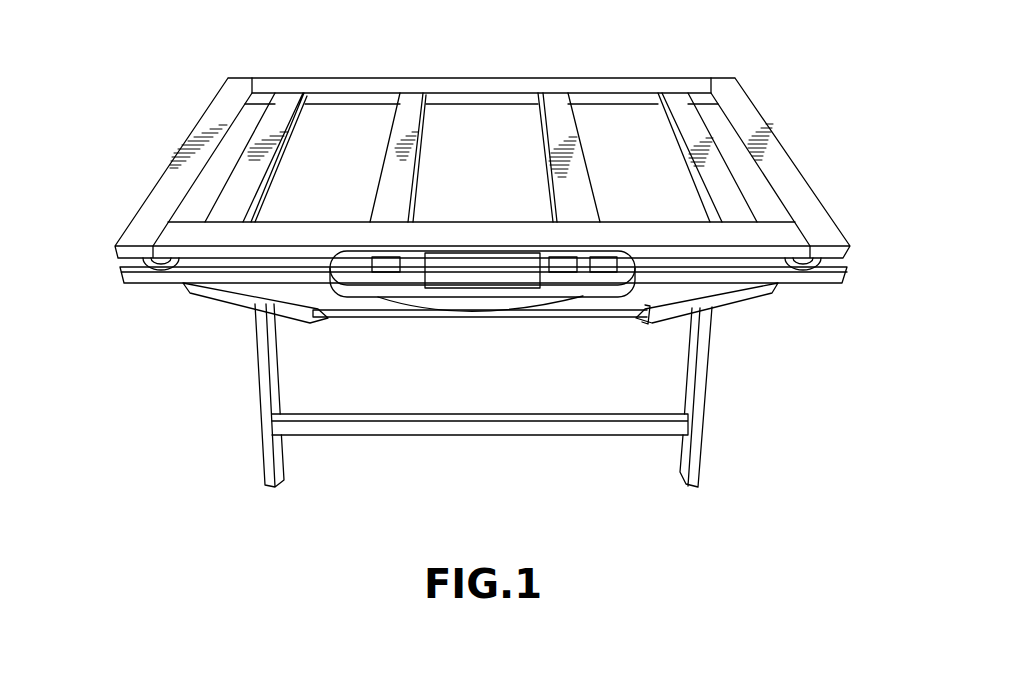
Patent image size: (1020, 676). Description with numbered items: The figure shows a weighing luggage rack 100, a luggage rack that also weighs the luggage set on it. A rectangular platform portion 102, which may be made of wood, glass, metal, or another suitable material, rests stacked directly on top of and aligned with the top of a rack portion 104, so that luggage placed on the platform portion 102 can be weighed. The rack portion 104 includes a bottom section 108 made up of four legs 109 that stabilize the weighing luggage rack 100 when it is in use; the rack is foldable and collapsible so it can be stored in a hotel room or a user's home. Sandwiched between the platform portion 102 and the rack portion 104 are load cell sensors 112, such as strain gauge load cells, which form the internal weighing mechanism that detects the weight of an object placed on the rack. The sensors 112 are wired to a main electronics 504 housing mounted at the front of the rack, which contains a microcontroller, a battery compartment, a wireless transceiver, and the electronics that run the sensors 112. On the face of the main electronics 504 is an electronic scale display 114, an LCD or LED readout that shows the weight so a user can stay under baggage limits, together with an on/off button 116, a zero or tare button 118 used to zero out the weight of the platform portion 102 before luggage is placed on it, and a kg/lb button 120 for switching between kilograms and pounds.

The weighing luggage rack 100 is at (112, 118).
The platform portion 102 is at (555, 110).
The rack portion 104 is at (828, 277).
The bottom section 108 is at (117, 485).
The legs 109 is at (293, 304).
The load cell sensors 112 is at (152, 270).
The display 114 is at (443, 277).
The on/off button 116 is at (385, 262).
The zero (tare) button 118 is at (558, 262).
The kg/lb button 120 is at (604, 262).
The main electronics 504 is at (502, 297).